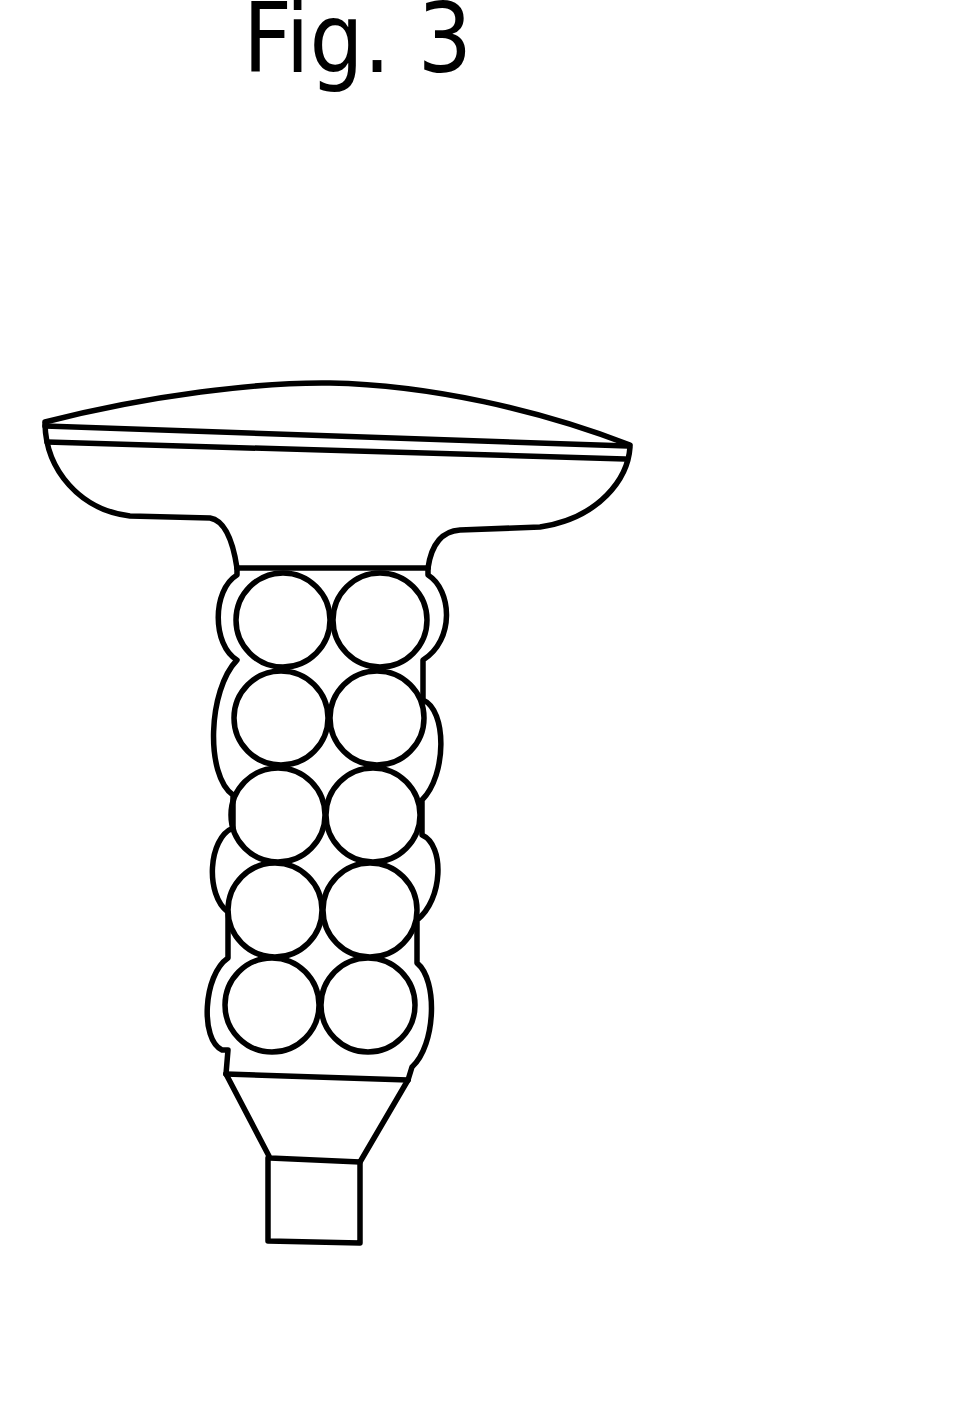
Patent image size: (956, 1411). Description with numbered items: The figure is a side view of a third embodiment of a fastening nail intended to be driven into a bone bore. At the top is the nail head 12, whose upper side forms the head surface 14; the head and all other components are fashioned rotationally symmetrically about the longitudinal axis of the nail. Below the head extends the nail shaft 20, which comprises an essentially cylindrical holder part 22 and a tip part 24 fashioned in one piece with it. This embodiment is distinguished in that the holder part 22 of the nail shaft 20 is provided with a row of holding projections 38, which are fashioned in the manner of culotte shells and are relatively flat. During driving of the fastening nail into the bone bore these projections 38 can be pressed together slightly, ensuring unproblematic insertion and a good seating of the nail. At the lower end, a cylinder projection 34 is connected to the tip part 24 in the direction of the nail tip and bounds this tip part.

The nail head 12 is at (467, 405).
The head surface 14 is at (481, 398).
The nail shaft 20 is at (477, 824).
The holding projections 38 is at (395, 820).
The holder part 22 is at (393, 1063).
The tip part 24 is at (508, 1154).
The cylinder projection 34 is at (340, 1208).